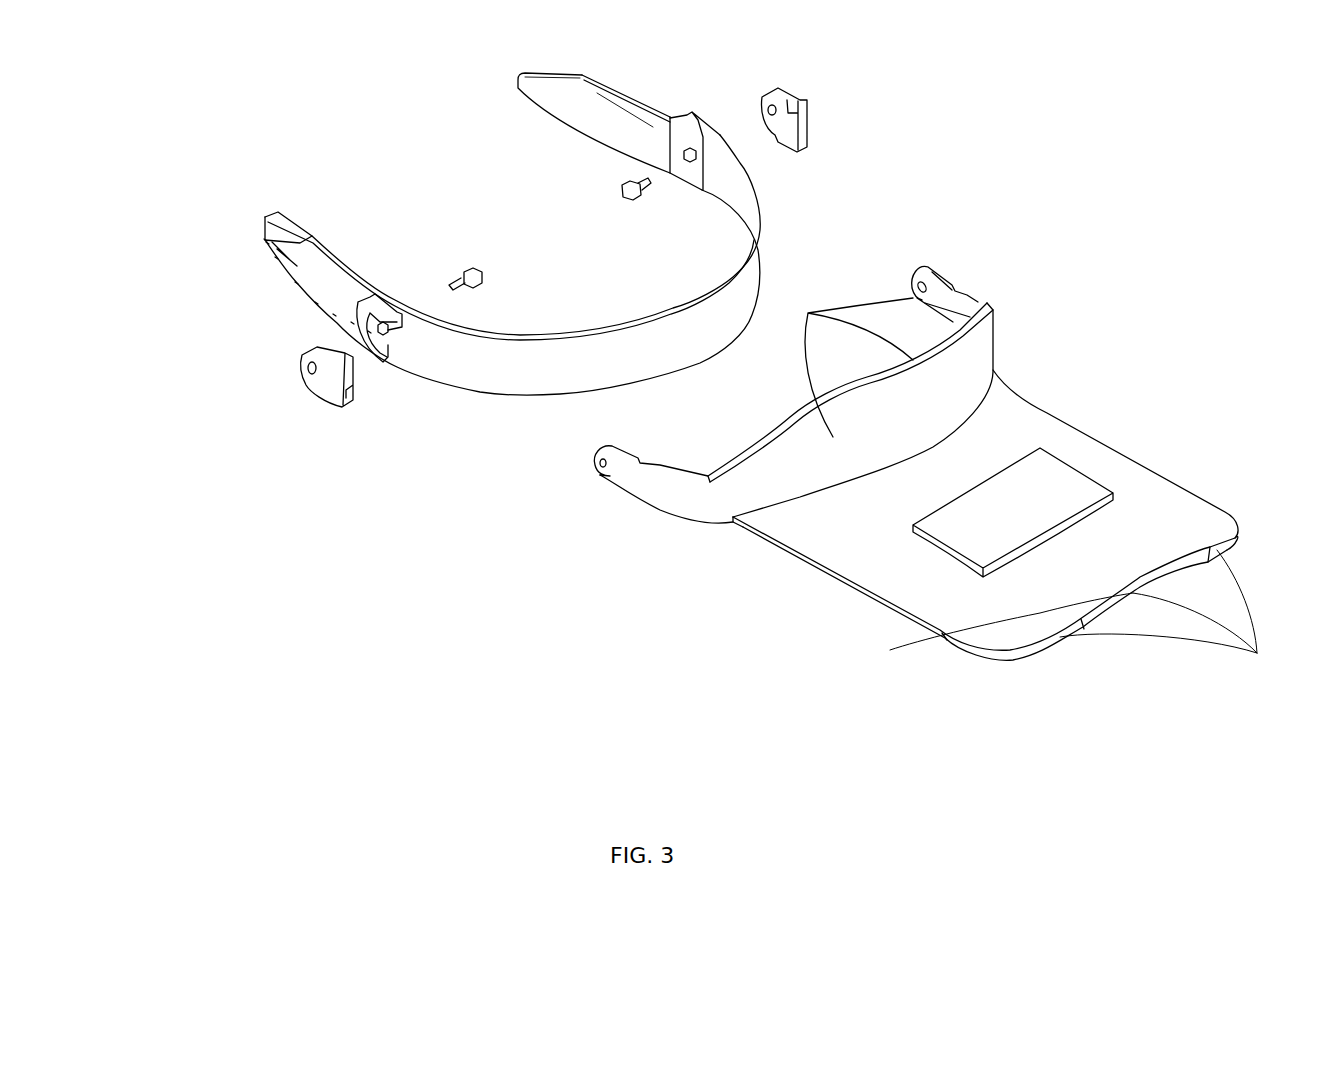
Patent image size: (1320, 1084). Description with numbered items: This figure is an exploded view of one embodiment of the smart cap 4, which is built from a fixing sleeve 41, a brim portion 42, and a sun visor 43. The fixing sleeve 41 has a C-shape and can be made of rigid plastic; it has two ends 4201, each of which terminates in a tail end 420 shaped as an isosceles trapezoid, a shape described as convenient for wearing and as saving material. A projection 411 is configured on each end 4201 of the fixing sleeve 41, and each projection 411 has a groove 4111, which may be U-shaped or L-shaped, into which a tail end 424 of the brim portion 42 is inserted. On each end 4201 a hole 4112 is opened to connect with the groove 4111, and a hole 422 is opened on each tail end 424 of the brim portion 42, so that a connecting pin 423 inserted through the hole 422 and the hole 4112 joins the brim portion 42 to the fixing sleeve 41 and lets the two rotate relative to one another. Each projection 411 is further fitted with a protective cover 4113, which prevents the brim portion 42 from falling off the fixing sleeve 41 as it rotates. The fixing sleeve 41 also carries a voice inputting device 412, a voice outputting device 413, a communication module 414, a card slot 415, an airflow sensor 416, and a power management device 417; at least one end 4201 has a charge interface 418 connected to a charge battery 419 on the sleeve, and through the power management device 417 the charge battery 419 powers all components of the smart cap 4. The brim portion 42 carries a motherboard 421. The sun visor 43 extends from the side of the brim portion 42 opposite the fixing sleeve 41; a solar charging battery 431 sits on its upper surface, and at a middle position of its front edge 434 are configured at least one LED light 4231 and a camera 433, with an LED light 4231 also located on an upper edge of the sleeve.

The smart cap 4 is at (265, 93).
The fixing sleeve 41 is at (307, 240).
The projection 411 is at (707, 127).
The groove 4111 is at (368, 362).
The hole 4112 is at (685, 150).
The protective cover 4113 is at (793, 127).
The voice inputting device 412 is at (267, 240).
The voice outputting device 413 is at (268, 243).
The communication module 414 is at (277, 258).
The card slot 415 is at (297, 283).
The airflow sensor 416 is at (317, 303).
The power management device 417 is at (335, 315).
The charge interface 418 is at (353, 323).
The charge battery 419 is at (370, 332).
The tail end 420 is at (537, 92).
The end 4201 is at (578, 75).
The connecting pin 423 is at (627, 190).
The brim portion 42 is at (817, 397).
The motherboard 421 is at (737, 488).
The hole 422 is at (916, 276).
The LED light 4231 is at (808, 313).
The tail end 424 is at (937, 287).
The sun visor 43 is at (1090, 457).
The solar charging battery 431 is at (1037, 467).
The camera 433 is at (1140, 567).
The front edge 434 is at (890, 650).